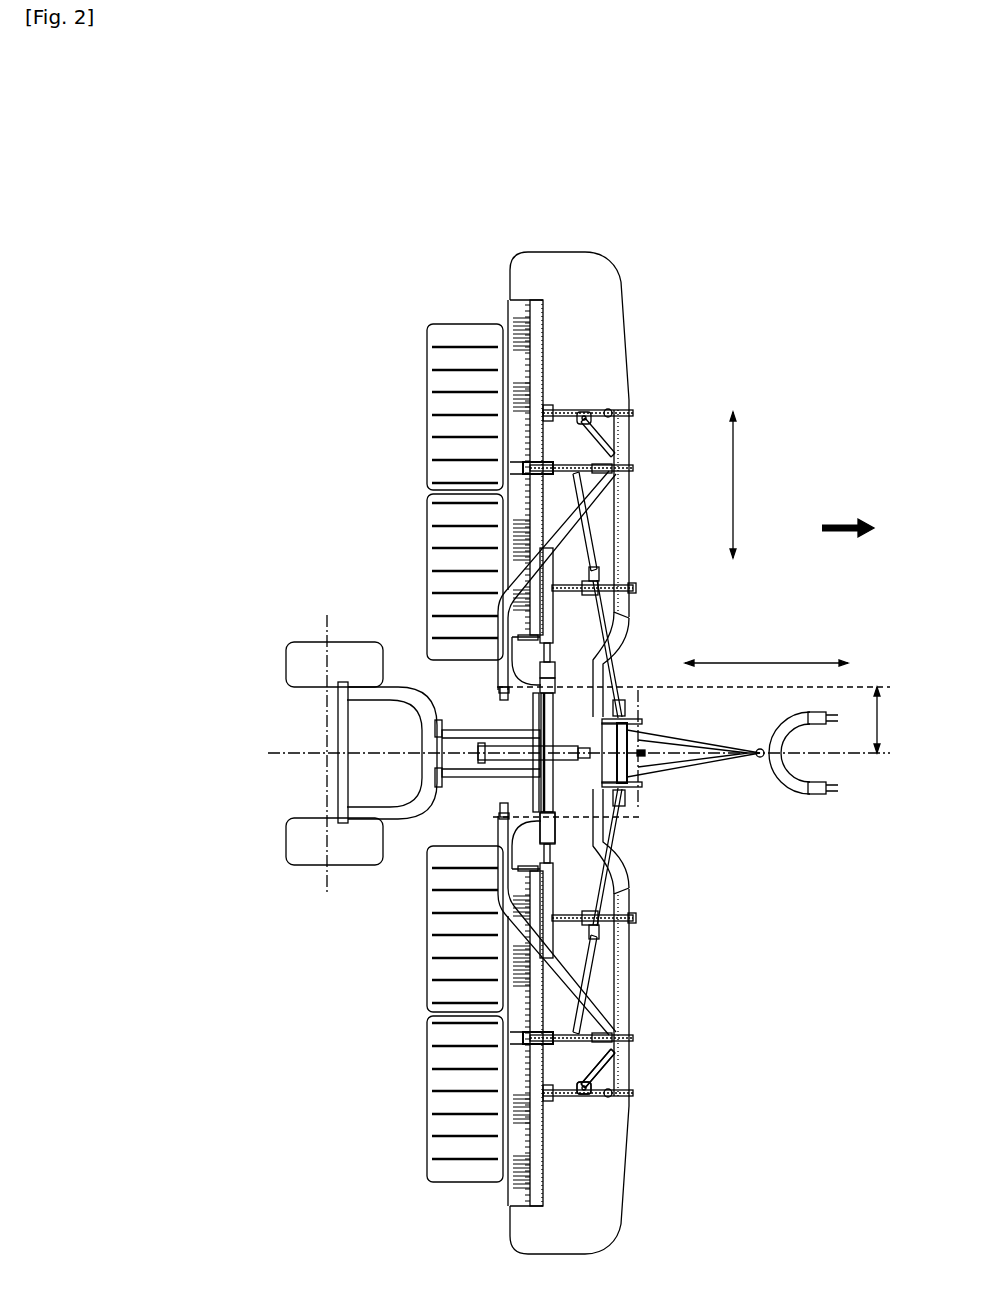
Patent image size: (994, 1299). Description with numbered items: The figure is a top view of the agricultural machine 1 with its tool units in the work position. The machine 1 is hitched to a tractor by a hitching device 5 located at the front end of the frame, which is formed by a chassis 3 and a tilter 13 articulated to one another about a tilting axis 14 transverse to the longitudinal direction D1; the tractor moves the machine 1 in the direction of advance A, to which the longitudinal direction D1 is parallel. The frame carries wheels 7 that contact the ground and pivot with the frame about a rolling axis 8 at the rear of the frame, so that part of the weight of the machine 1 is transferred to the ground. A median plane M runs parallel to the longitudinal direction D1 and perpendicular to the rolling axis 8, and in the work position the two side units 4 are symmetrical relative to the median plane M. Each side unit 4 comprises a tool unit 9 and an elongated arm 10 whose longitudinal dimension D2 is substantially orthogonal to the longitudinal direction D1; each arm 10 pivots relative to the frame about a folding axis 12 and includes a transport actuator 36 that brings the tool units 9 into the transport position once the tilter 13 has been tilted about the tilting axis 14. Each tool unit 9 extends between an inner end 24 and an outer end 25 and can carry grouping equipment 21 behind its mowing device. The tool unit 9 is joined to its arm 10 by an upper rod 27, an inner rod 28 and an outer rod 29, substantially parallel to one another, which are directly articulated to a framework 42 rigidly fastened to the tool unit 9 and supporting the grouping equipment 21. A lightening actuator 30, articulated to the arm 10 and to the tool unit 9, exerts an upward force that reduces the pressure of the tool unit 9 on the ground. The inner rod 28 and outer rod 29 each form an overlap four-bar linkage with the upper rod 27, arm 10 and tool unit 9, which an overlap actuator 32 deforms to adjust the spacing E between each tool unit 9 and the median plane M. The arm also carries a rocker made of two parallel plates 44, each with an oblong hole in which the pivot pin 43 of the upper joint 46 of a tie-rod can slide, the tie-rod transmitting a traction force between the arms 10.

The agricultural machine 1 is at (868, 296).
The chassis 3 is at (717, 747).
The side unit 4 is at (481, 753).
The hitching device 5 is at (824, 810).
The wheel 7 is at (310, 837).
The rolling axis 8 is at (327, 878).
The tool unit 9 is at (372, 488).
The arm 10 is at (643, 986).
The folding axis 12 is at (515, 817).
The tilter 13 is at (592, 722).
The tilting axis 14 is at (638, 740).
The grouping equipment 21 is at (471, 308).
The inner end 24 is at (634, 843).
The outer end 25 is at (629, 1247).
The upper rod 27 is at (593, 1037).
The inner rod 28 is at (597, 918).
The outer rod 29 is at (562, 1092).
The lightening actuator 30 is at (555, 462).
The overlap actuator 32 is at (602, 1068).
The transport actuator 36 is at (547, 580).
The framework 42 is at (535, 393).
The pivot pin 43 is at (628, 664).
The parallel plates 44 is at (557, 672).
The upper joint 46 is at (547, 688).
The direction of advance A is at (848, 515).
The longitudinal direction D1 is at (755, 663).
The longitudinal dimension D2 is at (733, 485).
The spacing E is at (878, 719).
The median plane M is at (283, 753).